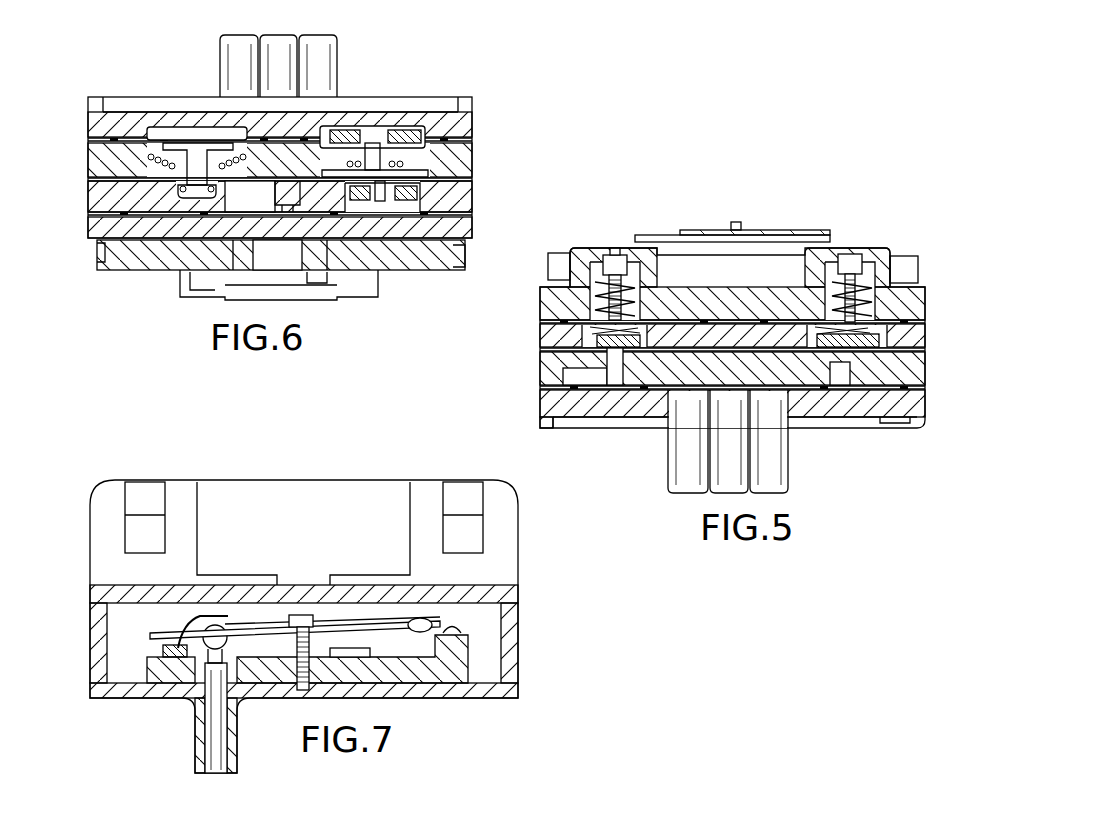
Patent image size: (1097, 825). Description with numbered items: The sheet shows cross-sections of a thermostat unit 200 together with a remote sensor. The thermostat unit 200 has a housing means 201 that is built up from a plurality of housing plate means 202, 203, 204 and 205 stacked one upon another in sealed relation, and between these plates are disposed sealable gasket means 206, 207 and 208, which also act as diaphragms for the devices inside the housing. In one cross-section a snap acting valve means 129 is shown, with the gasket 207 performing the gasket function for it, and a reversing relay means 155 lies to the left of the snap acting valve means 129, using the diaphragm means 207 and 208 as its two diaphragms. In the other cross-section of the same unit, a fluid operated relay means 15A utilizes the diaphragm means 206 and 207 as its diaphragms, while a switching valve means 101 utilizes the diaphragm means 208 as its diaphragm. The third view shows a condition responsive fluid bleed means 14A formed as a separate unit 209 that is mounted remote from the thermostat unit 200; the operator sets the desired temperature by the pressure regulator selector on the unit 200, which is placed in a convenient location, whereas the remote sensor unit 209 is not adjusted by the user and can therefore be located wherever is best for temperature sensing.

In FIG. 6, the thermostat unit 200 is at (442, 80).
In FIG. 5, the thermostat unit 200 is at (830, 214).
In FIG. 6, the housing means 201 is at (122, 104).
In FIG. 5, the housing means 201 is at (880, 426).
In FIG. 6, the housing plate means 202 is at (475, 225).
In FIG. 5, the housing plate means 202 is at (540, 297).
In FIG. 6, the housing plate means 203 is at (473, 200).
In FIG. 5, the housing plate means 203 is at (540, 333).
In FIG. 6, the housing plate means 204 is at (473, 157).
In FIG. 5, the housing plate means 204 is at (543, 370).
In FIG. 6, the housing plate means 205 is at (473, 110).
In FIG. 5, the housing plate means 205 is at (543, 402).
In FIG. 6, the gasket means 206 is at (140, 212).
In FIG. 5, the gasket means 206 is at (540, 322).
In FIG. 6, the gasket means 207 is at (472, 170).
In FIG. 5, the gasket means 207 is at (543, 350).
In FIG. 6, the gasket means 208 is at (457, 133).
In FIG. 5, the gasket means 208 is at (837, 389).
In FIG. 6, the switching valve means 101 is at (185, 133).
In FIG. 6, the fluid operated relay means 15A is at (373, 131).
In FIG. 5, the reversing relay means 155 is at (617, 244).
In FIG. 5, the snap acting valve means 129 is at (870, 264).
In FIG. 7, the separate unit 209 is at (540, 599).
In FIG. 7, the condition responsive fluid bleed means 14A is at (178, 708).